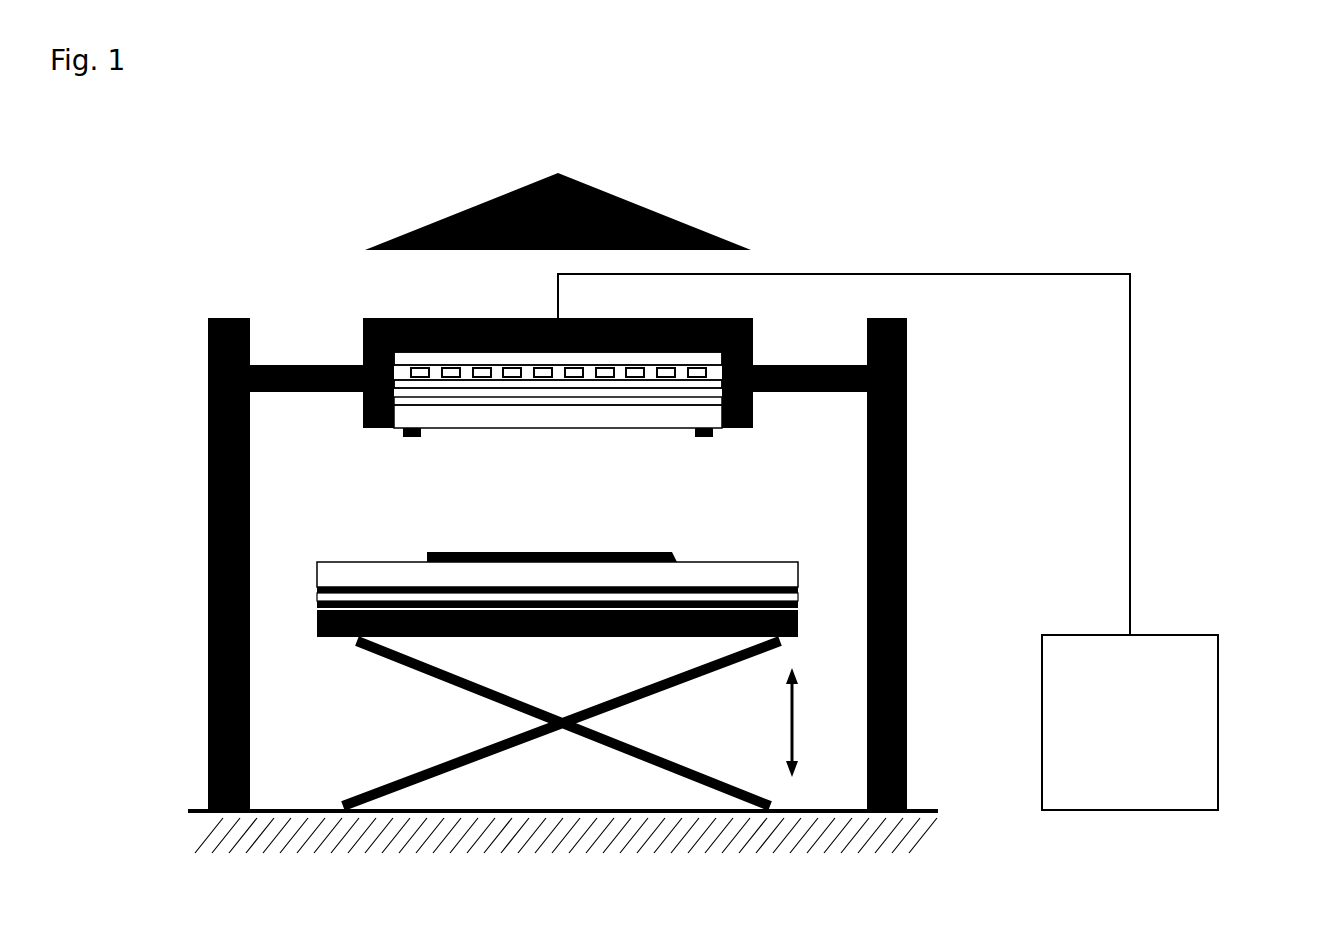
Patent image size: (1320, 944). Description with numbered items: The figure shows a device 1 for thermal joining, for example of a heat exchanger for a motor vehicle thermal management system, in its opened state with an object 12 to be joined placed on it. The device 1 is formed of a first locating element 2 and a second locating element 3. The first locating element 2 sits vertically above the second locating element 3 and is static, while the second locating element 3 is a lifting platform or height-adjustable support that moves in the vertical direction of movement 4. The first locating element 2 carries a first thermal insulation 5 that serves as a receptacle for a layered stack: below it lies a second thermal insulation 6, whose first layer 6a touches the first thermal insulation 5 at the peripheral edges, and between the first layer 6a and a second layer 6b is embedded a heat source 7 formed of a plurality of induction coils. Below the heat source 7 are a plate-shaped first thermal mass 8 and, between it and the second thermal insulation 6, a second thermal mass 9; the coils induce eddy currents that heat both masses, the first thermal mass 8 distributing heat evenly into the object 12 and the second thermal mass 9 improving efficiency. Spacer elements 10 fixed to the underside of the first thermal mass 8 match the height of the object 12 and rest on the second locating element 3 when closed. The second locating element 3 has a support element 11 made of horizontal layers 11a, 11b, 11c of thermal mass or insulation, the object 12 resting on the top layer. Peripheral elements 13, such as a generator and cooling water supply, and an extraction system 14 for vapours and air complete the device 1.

The device 1 is at (937, 218).
The first locating element 2 is at (908, 421).
The second locating element 3 is at (388, 667).
The direction of movement 4 is at (790, 694).
The first thermal insulation 5 is at (388, 318).
The second thermal insulation 6 is at (558, 370).
The first layer 6a is at (558, 358).
The second layer 6b is at (480, 383).
The heat source 7 is at (697, 380).
The first thermal mass 8 is at (442, 413).
The second thermal mass 9 is at (522, 398).
The spacer elements 10 is at (407, 438).
The support element 11 is at (553, 593).
The layer 11a is at (317, 575).
The layer 11b is at (317, 592).
The layer 11c is at (317, 611).
The object to be joined 12 is at (680, 556).
The peripheral elements 13 is at (1182, 697).
The extraction system 14 is at (628, 210).